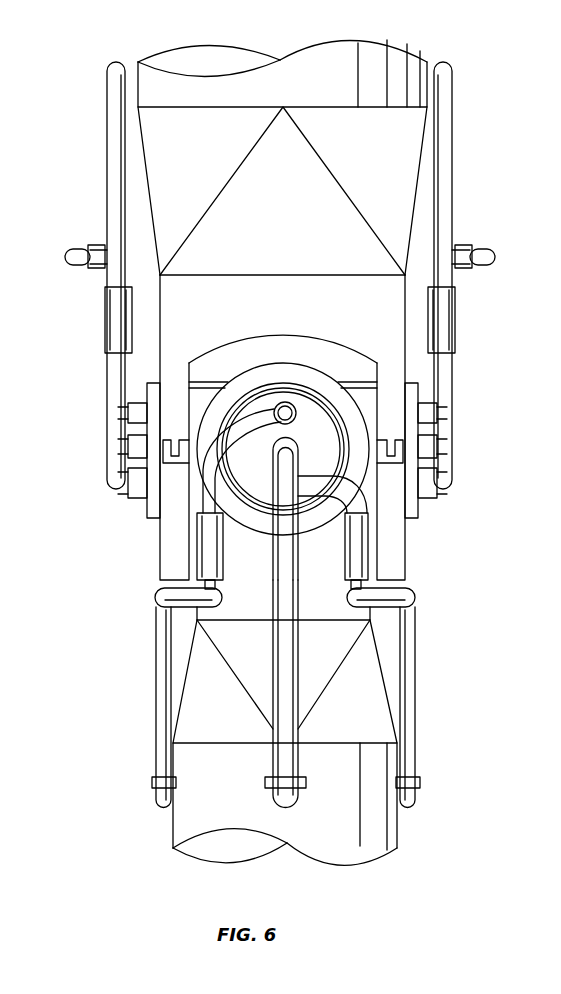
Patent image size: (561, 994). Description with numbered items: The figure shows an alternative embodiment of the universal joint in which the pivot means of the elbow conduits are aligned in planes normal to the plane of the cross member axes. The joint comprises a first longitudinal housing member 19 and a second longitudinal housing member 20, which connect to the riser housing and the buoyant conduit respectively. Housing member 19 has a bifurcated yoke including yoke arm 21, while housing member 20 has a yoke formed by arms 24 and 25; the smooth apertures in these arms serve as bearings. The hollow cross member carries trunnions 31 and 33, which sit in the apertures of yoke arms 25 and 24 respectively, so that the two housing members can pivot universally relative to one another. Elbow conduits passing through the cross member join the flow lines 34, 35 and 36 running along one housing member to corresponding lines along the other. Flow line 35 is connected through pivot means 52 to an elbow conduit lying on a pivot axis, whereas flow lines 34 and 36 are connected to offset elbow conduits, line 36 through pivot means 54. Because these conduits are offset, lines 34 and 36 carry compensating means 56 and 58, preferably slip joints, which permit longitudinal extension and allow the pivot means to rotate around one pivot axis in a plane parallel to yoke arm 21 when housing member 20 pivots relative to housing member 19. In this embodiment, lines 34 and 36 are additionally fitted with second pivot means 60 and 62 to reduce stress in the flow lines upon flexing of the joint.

The first longitudinal housing member 19 is at (368, 815).
The second longitudinal housing member 20 is at (380, 157).
The yoke arm 21 is at (283, 362).
The yoke arm 24 is at (382, 543).
The yoke arm 25 is at (177, 505).
The trunnion 31 is at (155, 408).
The trunnion 33 is at (413, 395).
The flow line 34 is at (408, 698).
The flow line 35 is at (288, 698).
The flow line 36 is at (163, 692).
The pivot means 52 is at (292, 447).
The pivot means 54 is at (280, 398).
The compensating means 56 is at (370, 523).
The compensating means 58 is at (200, 537).
The second pivot means 60 is at (357, 612).
The second pivot means 62 is at (200, 590).